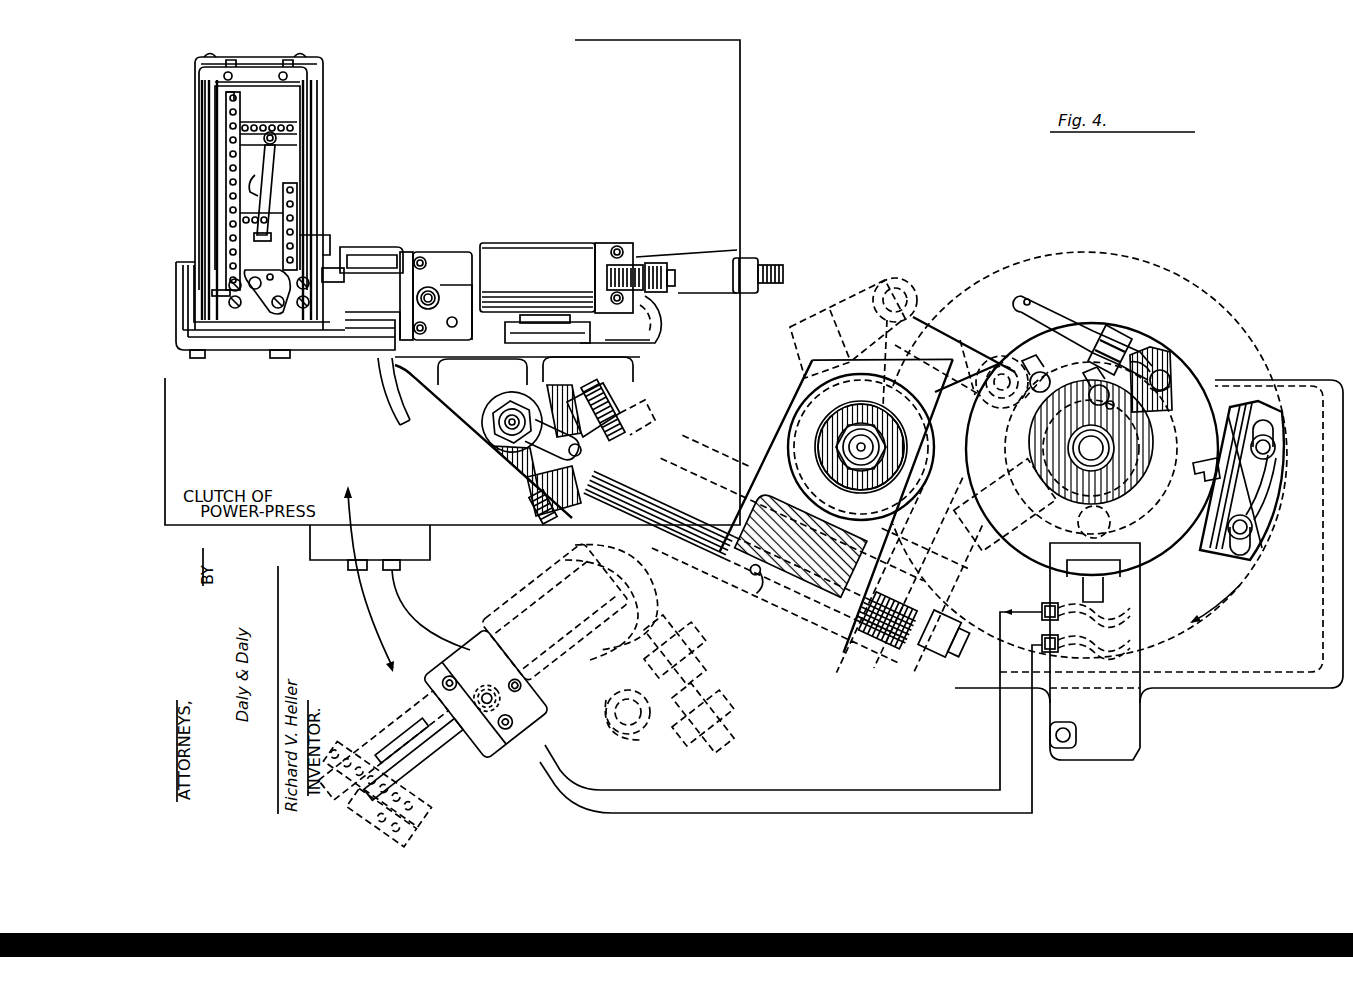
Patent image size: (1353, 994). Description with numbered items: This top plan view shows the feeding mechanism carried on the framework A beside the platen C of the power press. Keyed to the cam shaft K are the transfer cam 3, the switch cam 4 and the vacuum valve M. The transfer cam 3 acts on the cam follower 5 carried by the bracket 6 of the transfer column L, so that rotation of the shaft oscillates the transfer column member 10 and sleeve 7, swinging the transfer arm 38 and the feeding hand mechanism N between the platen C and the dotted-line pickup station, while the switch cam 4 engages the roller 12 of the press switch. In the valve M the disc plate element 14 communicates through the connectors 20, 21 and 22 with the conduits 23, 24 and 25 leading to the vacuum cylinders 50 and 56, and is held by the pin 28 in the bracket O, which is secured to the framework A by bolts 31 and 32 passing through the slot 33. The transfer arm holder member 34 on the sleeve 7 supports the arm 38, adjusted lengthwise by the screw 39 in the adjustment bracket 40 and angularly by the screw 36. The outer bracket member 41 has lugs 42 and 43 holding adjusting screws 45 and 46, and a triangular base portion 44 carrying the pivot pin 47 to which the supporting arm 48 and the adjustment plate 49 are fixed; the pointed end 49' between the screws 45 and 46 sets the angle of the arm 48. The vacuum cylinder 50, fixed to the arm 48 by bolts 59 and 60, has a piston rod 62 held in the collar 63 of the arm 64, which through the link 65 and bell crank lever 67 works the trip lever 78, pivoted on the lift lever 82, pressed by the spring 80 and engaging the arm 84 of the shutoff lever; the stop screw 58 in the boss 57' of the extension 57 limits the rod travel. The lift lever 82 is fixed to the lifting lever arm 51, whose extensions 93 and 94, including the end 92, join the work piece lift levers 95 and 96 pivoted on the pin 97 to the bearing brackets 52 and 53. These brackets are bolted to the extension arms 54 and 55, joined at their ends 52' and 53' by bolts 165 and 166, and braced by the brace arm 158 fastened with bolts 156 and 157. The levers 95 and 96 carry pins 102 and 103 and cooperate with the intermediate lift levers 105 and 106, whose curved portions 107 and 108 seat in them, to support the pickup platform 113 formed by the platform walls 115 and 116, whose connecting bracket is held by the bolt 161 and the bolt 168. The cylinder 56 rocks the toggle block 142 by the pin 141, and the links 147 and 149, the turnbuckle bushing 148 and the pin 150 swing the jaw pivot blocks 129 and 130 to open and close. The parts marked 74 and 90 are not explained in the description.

The path circle of disk 3 is at (1058, 262).
The disk 4 is at (1170, 425).
The pin 5 is at (908, 280).
The link 6 is at (845, 298).
The hub 7 is at (830, 435).
The slide 10 is at (788, 461).
The support column 12 is at (1107, 510).
The arm 14 is at (1107, 323).
The pin 20 is at (1047, 403).
The pin 21 is at (1090, 402).
The pad 22 is at (1176, 368).
The pin 23 is at (1035, 370).
The arm 24 is at (387, 403).
The strap 25 is at (1140, 350).
The stop 28 is at (1220, 476).
The screw 31 is at (1248, 537).
The screw 32 is at (1272, 438).
The bracket 33 is at (1243, 505).
The slide block 34 is at (783, 445).
The pin 36 is at (757, 577).
The rod 38 is at (692, 540).
The nut 39 is at (873, 640).
The lock nut 40 is at (910, 645).
The clamp block 41 is at (557, 400).
The plate 42 is at (623, 410).
The clamp block 43 is at (532, 483).
The plate 44 is at (507, 467).
The arm 45 is at (517, 530).
The bolt 46 is at (607, 385).
The arm 47 is at (505, 424).
The nut 48 is at (487, 410).
The pin 49 is at (532, 433).
The pin 49' is at (622, 442).
The solenoid 50 is at (537, 242).
The bracket 51 is at (335, 277).
The casing 52 is at (289, 191).
The lug 52' is at (301, 47).
The housing 53 is at (233, 168).
The lug 53' is at (227, 47).
The plate 54 is at (353, 335).
The block 55 is at (375, 250).
The bracket 56 is at (405, 252).
The lever 57 is at (686, 253).
The block 57' is at (757, 248).
The nut 58 is at (782, 263).
The screw 59 is at (619, 246).
The plate 60 is at (622, 302).
The connector 62 is at (674, 282).
The shaft 63 is at (647, 263).
The bracket 64 is at (665, 320).
The plate 65 is at (550, 315).
The plate 67 is at (510, 320).
The foot 74 is at (485, 342).
The foot 78 is at (470, 345).
The block 80 is at (462, 258).
The screw 82 is at (415, 313).
The bracket 84 is at (450, 335).
The bearing 90 is at (430, 287).
The casing wall 92 is at (200, 298).
The base 93 is at (236, 320).
The plate 94 is at (390, 312).
The spring 95 is at (208, 195).
The spring 96 is at (318, 175).
The guide 97 is at (212, 245).
The bracket 102 is at (227, 98).
The lug 103 is at (300, 79).
The bar 105 is at (213, 165).
The bar 106 is at (313, 162).
The bar 107 is at (323, 132).
The bar 108 is at (201, 137).
The frame 113 is at (263, 75).
The tab 115 is at (308, 240).
The contact plate 116 is at (217, 213).
The contact row 129 is at (293, 130).
The contact row 130 is at (297, 205).
The screw 141 is at (280, 306).
The plate 142 is at (258, 290).
The plate 147 is at (298, 187).
The hook 148 is at (252, 182).
The plate 149 is at (300, 153).
The pivot 150 is at (268, 132).
The wall 156 is at (182, 290).
The foot 157 is at (205, 352).
The base 158 is at (215, 340).
The screw 161 is at (238, 308).
The lug 165 is at (212, 54).
The lug 166 is at (302, 53).
The screw 168 is at (304, 308).
The frame C is at (746, 118).
The switch unit N is at (332, 88).
The disk L is at (790, 388).
The disk M is at (1206, 362).
The hub K is at (1112, 448).
The bracket O is at (1286, 483).
The direction of rotation A is at (1273, 600).